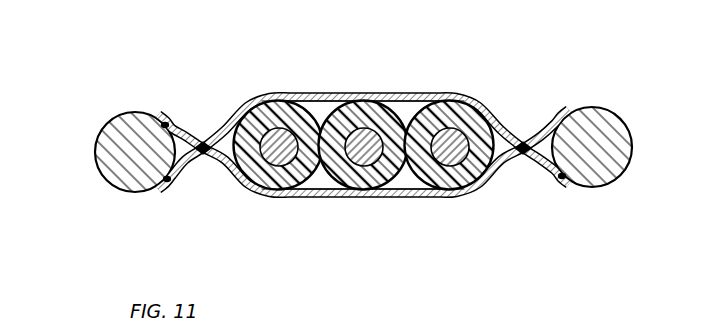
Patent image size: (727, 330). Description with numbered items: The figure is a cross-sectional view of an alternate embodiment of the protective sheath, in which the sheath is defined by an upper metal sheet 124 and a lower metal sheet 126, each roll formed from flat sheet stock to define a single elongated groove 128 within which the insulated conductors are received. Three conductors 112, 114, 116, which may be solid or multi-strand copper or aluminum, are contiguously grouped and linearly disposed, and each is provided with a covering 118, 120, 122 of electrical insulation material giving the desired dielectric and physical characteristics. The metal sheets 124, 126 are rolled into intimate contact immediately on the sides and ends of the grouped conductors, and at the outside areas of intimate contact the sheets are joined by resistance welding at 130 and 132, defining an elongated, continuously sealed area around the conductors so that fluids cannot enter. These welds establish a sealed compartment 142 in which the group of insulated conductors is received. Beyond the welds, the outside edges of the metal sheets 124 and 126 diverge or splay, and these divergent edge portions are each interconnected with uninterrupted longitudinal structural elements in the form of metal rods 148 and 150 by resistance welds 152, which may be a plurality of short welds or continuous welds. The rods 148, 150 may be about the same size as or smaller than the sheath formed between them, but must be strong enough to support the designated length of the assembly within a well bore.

The conductor 112 is at (267, 149).
The conductor 114 is at (362, 153).
The conductor 116 is at (451, 151).
The covering 118 is at (280, 101).
The covering 120 is at (380, 101).
The covering 122 is at (470, 101).
The upper metal sheet 124 is at (327, 93).
The lower metal sheet 126 is at (400, 198).
The elongated groove 128 is at (417, 100).
The resistance weld 130 is at (203, 147).
The resistance weld 132 is at (523, 150).
The sealed compartment 142 is at (363, 137).
The metal rod 148 is at (96, 137).
The metal rod 150 is at (627, 123).
The resistance welds 152 is at (167, 179).